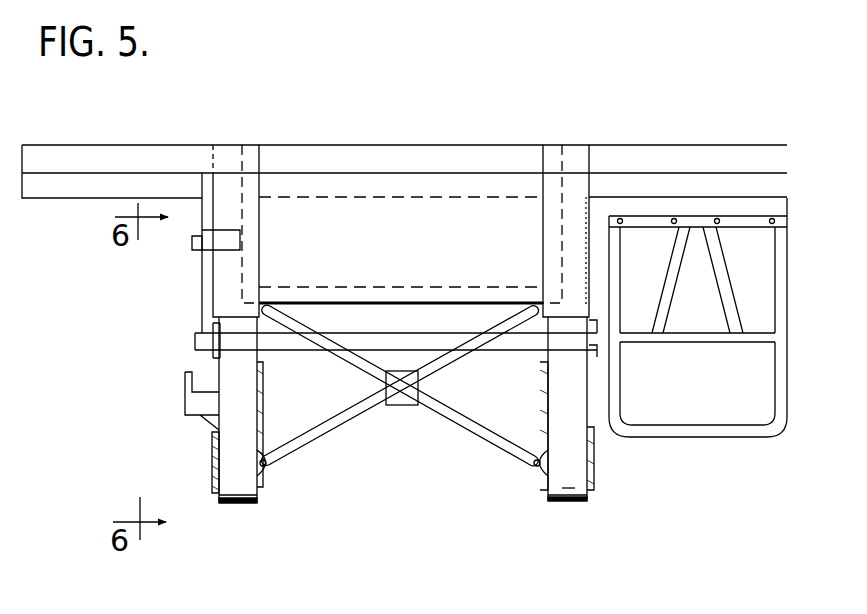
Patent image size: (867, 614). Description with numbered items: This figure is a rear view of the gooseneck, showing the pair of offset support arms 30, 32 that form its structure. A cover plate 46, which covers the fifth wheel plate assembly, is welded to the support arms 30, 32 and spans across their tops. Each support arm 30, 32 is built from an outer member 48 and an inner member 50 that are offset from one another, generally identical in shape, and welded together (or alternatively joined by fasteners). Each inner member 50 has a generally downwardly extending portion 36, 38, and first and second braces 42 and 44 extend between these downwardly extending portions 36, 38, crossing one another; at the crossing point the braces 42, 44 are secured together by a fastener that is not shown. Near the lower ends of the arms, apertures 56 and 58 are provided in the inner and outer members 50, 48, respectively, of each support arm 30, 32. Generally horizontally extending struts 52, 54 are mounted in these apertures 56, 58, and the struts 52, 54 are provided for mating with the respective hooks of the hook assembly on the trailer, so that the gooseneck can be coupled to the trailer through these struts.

The support arm 30 is at (207, 274).
The support arm 32 is at (596, 248).
The generally downwardly extending portion 36 is at (214, 380).
The generally downwardly extending portion 38 is at (594, 408).
The first brace 42 is at (330, 433).
The second brace 44 is at (458, 424).
The cover plate 46 is at (632, 143).
The outer member 48 is at (219, 501).
The inner member 50 is at (260, 503).
The generally horizontally extending strut 52 is at (237, 491).
The generally horizontally extending strut 54 is at (565, 489).
The aperture 56 is at (263, 484).
The aperture 58 is at (214, 500).